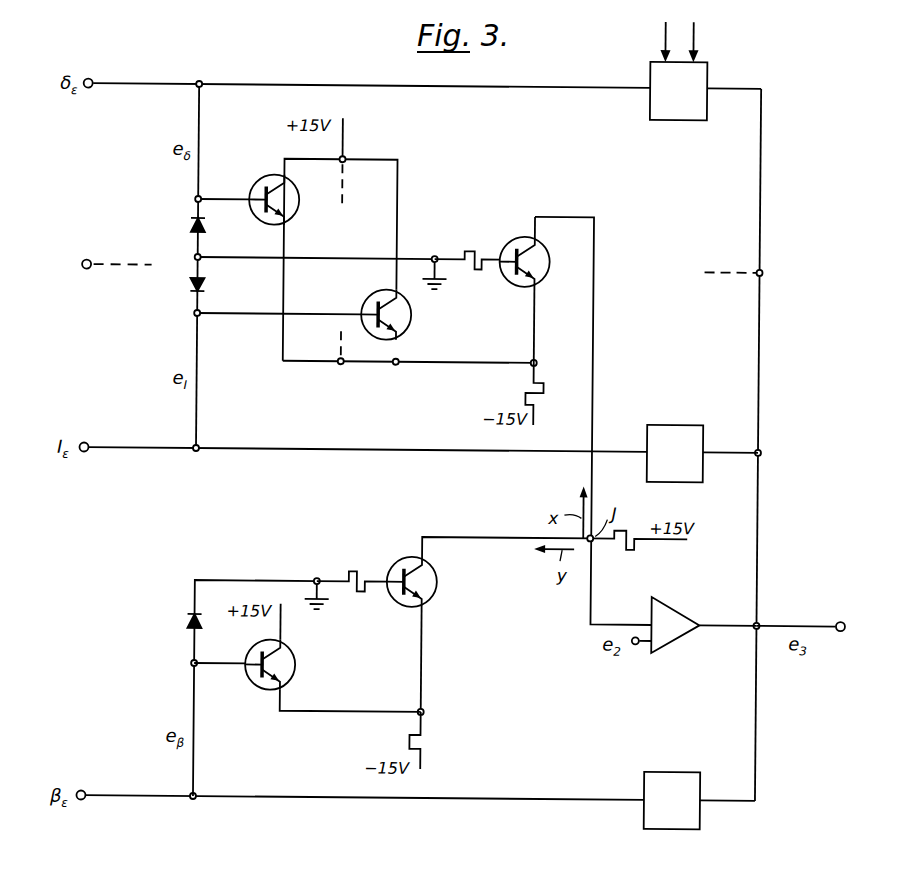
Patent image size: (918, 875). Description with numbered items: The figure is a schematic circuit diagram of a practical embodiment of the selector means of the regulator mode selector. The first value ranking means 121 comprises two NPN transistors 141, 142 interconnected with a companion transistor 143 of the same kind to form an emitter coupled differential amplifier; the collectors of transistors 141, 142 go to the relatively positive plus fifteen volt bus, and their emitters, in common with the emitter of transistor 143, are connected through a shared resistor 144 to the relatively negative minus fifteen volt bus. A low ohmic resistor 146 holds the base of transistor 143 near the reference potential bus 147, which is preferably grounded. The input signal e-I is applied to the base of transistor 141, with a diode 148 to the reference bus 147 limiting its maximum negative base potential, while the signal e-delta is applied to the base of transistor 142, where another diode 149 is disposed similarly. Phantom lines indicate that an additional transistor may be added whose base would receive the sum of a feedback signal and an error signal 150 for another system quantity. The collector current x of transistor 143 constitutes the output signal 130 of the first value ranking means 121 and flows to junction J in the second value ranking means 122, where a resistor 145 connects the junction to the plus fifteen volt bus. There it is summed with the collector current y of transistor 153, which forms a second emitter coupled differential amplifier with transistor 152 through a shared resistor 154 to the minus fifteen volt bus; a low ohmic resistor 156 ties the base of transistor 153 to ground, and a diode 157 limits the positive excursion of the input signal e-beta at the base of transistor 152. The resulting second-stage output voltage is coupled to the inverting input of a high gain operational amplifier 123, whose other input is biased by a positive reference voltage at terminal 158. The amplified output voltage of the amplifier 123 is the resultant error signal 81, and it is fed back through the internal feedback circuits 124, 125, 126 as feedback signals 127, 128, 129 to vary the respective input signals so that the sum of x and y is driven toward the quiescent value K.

The feedback signal 129 is at (251, 82).
The feedback signal 128 is at (276, 452).
The feedback signal 127 is at (273, 800).
The internal feedback circuit 126 is at (709, 71).
The internal feedback circuit 125 is at (681, 420).
The internal feedback circuit 124 is at (678, 767).
The first value ranking means 121 is at (357, 247).
The second value ranking means 122 is at (531, 598).
The operational amplifier 123 is at (694, 597).
The output signal 130 is at (568, 213).
The transistor 141 is at (408, 322).
The transistor 142 is at (262, 174).
The transistor 143 is at (543, 278).
The resistor 144 is at (543, 388).
The resistor 145 is at (628, 552).
The resistor 146 is at (470, 248).
The reference potential bus 147 is at (432, 256).
The diode 148 is at (188, 285).
The diode 149 is at (188, 227).
The error signal 150 is at (238, 265).
The transistor 152 is at (296, 668).
The transistor 153 is at (433, 597).
The resistor 154 is at (428, 736).
The resistor 156 is at (351, 568).
The diode 157 is at (186, 620).
The terminal 158 is at (637, 642).
The resultant error signal 81 is at (845, 617).